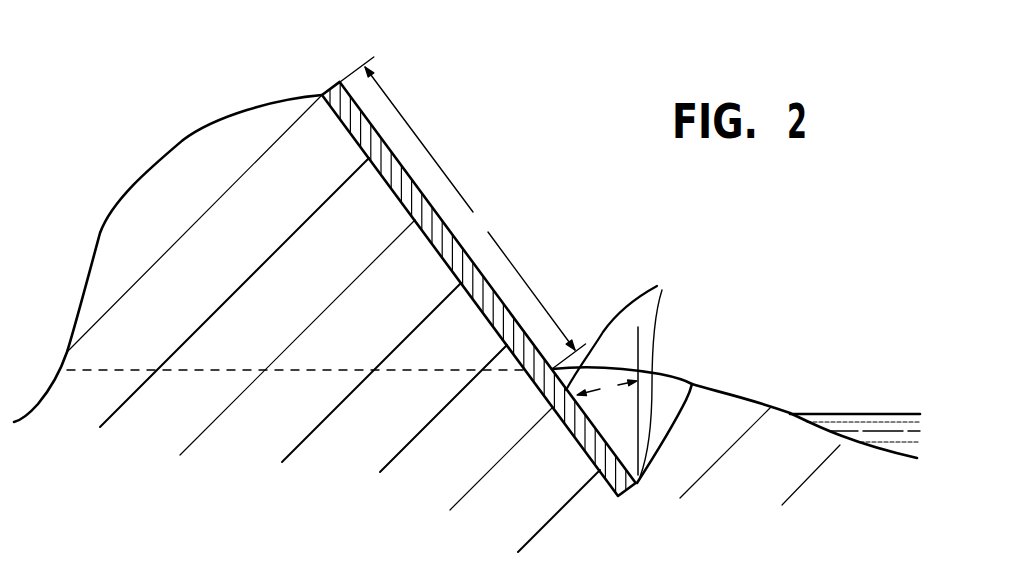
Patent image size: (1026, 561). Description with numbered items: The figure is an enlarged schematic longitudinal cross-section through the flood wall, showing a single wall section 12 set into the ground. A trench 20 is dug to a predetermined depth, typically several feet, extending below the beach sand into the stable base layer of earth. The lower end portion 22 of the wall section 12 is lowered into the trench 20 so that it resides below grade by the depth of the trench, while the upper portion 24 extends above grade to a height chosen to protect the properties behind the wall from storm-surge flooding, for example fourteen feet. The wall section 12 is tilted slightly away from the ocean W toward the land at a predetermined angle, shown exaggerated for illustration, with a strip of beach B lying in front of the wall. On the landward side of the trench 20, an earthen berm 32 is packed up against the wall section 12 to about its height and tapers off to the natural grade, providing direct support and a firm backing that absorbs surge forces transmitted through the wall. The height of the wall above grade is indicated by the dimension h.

The wall section 12 is at (327, 84).
The upper portion 24 is at (445, 237).
The earthen berm 32 is at (258, 232).
The lower end portion 22 is at (619, 328).
The trench 20 is at (667, 397).
The beach B is at (740, 393).
The ocean W is at (870, 427).
The slab height h is at (463, 213).